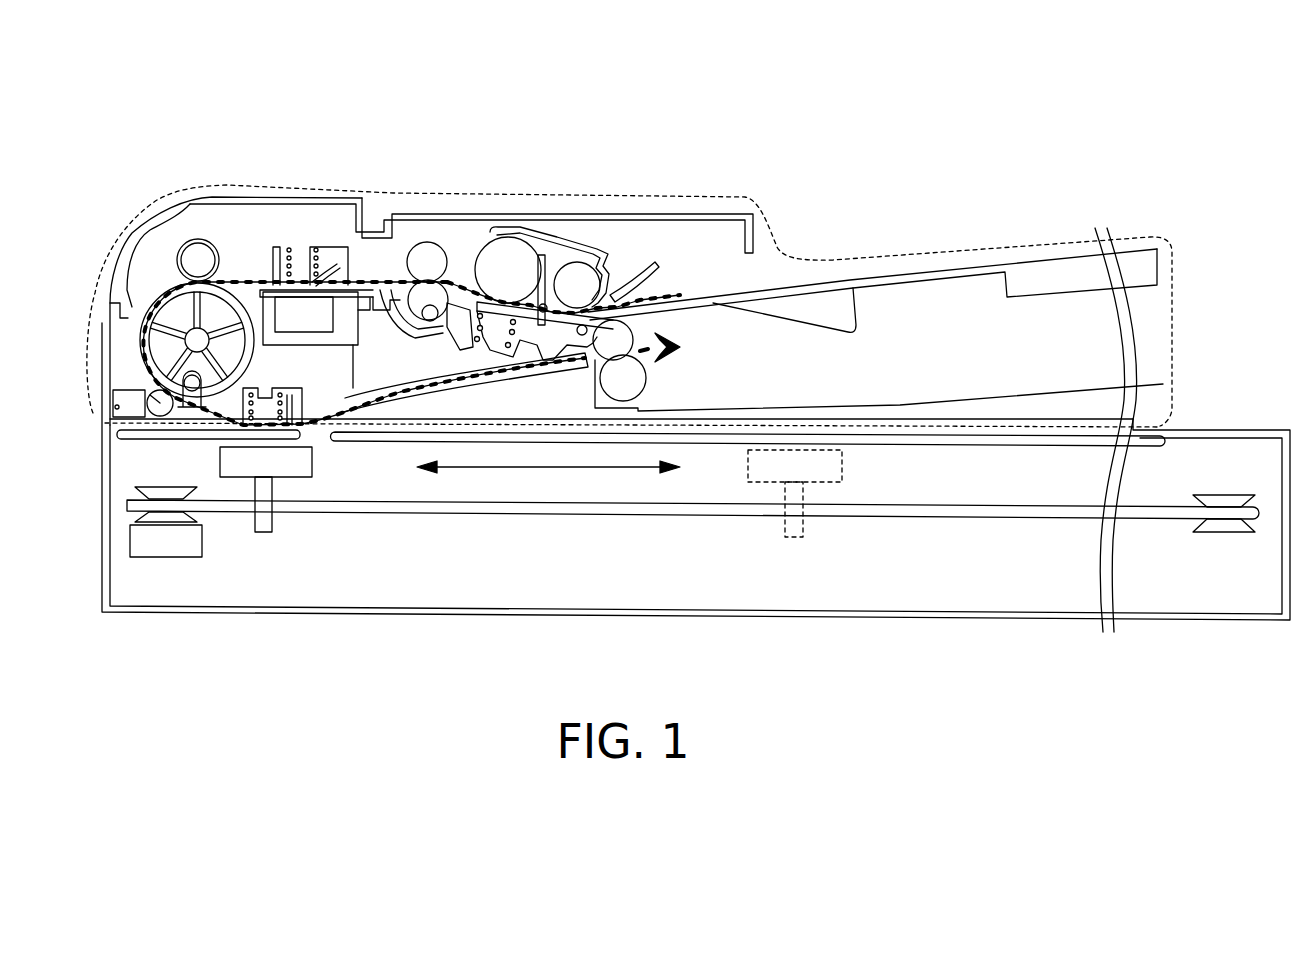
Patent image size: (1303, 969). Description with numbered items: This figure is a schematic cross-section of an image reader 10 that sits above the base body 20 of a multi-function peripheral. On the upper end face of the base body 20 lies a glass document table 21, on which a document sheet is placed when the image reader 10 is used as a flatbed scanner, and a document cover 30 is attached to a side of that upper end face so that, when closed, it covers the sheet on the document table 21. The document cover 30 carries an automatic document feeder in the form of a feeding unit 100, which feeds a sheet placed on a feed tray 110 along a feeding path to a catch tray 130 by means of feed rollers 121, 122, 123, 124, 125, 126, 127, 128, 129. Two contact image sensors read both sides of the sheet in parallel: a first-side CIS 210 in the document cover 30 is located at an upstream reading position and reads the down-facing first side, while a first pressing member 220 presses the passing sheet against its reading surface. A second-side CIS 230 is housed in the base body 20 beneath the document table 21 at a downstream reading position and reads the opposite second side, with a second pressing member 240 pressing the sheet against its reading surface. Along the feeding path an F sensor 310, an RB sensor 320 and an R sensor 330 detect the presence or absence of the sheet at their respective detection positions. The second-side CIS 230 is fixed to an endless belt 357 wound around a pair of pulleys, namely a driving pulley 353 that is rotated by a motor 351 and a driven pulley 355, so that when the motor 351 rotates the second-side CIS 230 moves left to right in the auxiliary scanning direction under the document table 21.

The image reader 10 is at (162, 132).
The base body 20 is at (102, 535).
The document table 21 is at (940, 437).
The document cover 30 is at (653, 197).
The feeding unit 100 is at (467, 236).
The feed tray 110 is at (777, 287).
The feed roller 121 is at (543, 265).
The feed roller 122 is at (508, 255).
The feed roller 123 is at (427, 293).
The feed roller 124 is at (412, 257).
The feed roller 125 is at (187, 257).
The feed roller 126 is at (145, 307).
The feed roller 127 is at (157, 414).
The feed roller 128 is at (623, 334).
The feed roller 129 is at (633, 388).
The catch tray 130 is at (940, 403).
The first-side contact image sensor 210 is at (280, 312).
The first pressing member 220 is at (308, 262).
The second-side contact image sensor 230 is at (313, 457).
The second pressing member 240 is at (247, 385).
The F sensor 310 is at (577, 280).
The RB sensor 320 is at (367, 275).
The R sensor 330 is at (186, 410).
The motor 351 is at (157, 547).
The driving pulley 353 is at (192, 517).
The driven pulley 355 is at (1223, 527).
The endless belt 357 is at (505, 512).